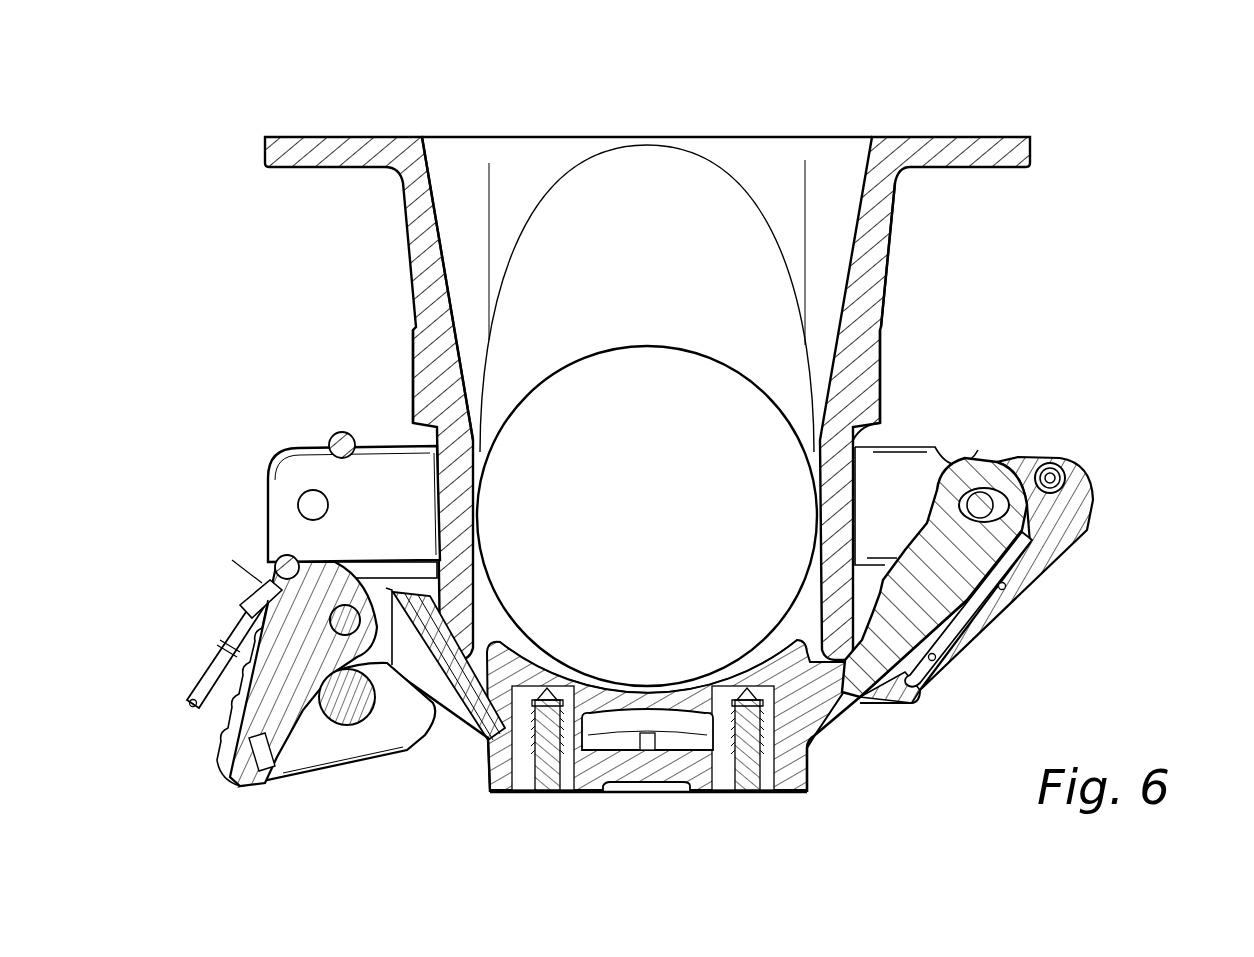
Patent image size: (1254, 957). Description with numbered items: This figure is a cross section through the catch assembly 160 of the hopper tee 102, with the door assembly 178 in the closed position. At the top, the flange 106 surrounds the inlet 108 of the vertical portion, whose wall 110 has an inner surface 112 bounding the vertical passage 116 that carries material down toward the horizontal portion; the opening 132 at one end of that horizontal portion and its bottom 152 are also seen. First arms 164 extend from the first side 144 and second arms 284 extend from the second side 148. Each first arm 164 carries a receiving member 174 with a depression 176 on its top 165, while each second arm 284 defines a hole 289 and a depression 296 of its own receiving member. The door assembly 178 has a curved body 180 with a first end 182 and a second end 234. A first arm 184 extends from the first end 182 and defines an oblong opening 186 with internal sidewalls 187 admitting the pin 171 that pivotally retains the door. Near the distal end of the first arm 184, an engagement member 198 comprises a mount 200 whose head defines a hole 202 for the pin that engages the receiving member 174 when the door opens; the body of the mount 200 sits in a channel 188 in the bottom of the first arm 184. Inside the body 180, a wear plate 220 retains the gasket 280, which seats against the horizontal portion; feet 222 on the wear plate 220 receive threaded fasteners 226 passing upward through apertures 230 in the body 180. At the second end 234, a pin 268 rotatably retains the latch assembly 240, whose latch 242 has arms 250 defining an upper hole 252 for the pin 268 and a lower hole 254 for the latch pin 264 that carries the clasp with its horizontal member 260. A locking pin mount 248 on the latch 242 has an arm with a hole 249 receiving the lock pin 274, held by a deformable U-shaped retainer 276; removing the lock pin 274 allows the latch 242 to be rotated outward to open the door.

The hopper tee 102 is at (1135, 112).
The flange 106 is at (945, 137).
The inlet 108 is at (712, 137).
The wall 110 is at (608, 165).
The inner surface 112 is at (632, 213).
The vertical passage 116 is at (524, 163).
The opening 132 is at (837, 342).
The first side 144 is at (413, 352).
The second side 148 is at (882, 405).
The bottom 152 is at (688, 680).
The catch assembly 160 is at (1103, 428).
The first arms 164 is at (875, 518).
The top 165 is at (843, 440).
The pin 171 is at (990, 493).
The receiving member 174 is at (998, 366).
The depression 176 is at (933, 447).
The door assembly 178 is at (907, 763).
The curved body 180 is at (820, 723).
The first end 182 is at (1062, 626).
The first arm 184 is at (968, 650).
The oblong opening 186 is at (1022, 567).
The internal sidewalls 187 is at (1060, 530).
The channel 188 is at (908, 697).
The engagement member 198 is at (1127, 497).
The mount 200 is at (1053, 570).
The hole 202 is at (1068, 478).
The wear plate 220 is at (609, 705).
The feet 222 is at (698, 783).
The threaded fasteners 226 is at (540, 793).
The apertures 230 is at (492, 793).
The second end 234 is at (414, 798).
The latch assembly 240 is at (180, 777).
The latch 242 is at (230, 780).
The locking pin mount 248 is at (208, 528).
The hole 249 is at (262, 578).
The arms 250 is at (300, 590).
The upper hole 252 is at (340, 625).
The lower hole 254 is at (337, 712).
The horizontal member 260 is at (342, 431).
The latch pin 264 is at (290, 772).
The pin 268 is at (233, 723).
The lock pin 274 is at (278, 560).
The U-shaped retainer 276 is at (185, 699).
The gasket 280 is at (490, 640).
The second arms 284 is at (268, 448).
The hole 289 is at (328, 505).
The depression 296 is at (350, 458).